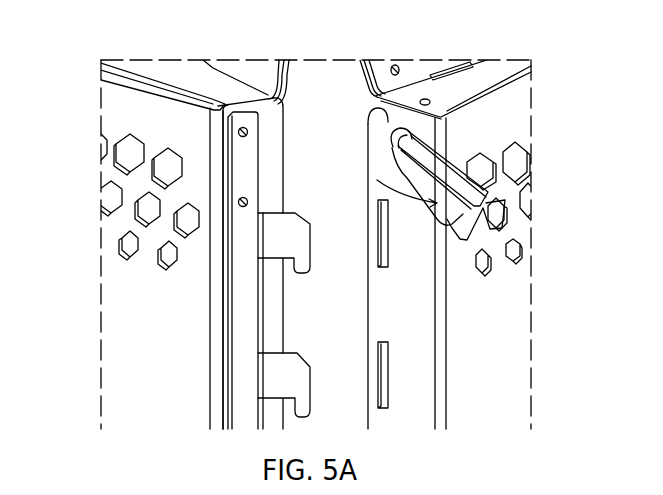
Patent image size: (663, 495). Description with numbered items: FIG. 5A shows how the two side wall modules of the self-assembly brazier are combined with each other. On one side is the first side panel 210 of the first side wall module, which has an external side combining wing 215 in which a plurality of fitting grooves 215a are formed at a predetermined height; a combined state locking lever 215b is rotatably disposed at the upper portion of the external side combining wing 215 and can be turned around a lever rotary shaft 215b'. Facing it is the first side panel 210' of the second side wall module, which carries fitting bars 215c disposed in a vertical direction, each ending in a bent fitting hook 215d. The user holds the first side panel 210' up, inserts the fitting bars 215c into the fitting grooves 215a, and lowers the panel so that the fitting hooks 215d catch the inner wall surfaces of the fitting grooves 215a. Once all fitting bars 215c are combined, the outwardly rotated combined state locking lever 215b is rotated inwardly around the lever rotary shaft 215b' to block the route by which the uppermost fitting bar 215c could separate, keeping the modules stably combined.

The first side panel 210 is at (483, 168).
The first side panel 210' is at (150, 244).
The external side combining wing 215 is at (410, 314).
The fitting grooves 215a is at (387, 245).
The combined state locking lever 215b is at (491, 187).
The lever rotary shaft 215b' is at (323, 72).
The fitting bars 215c is at (305, 228).
The fitting hook 215d is at (303, 273).